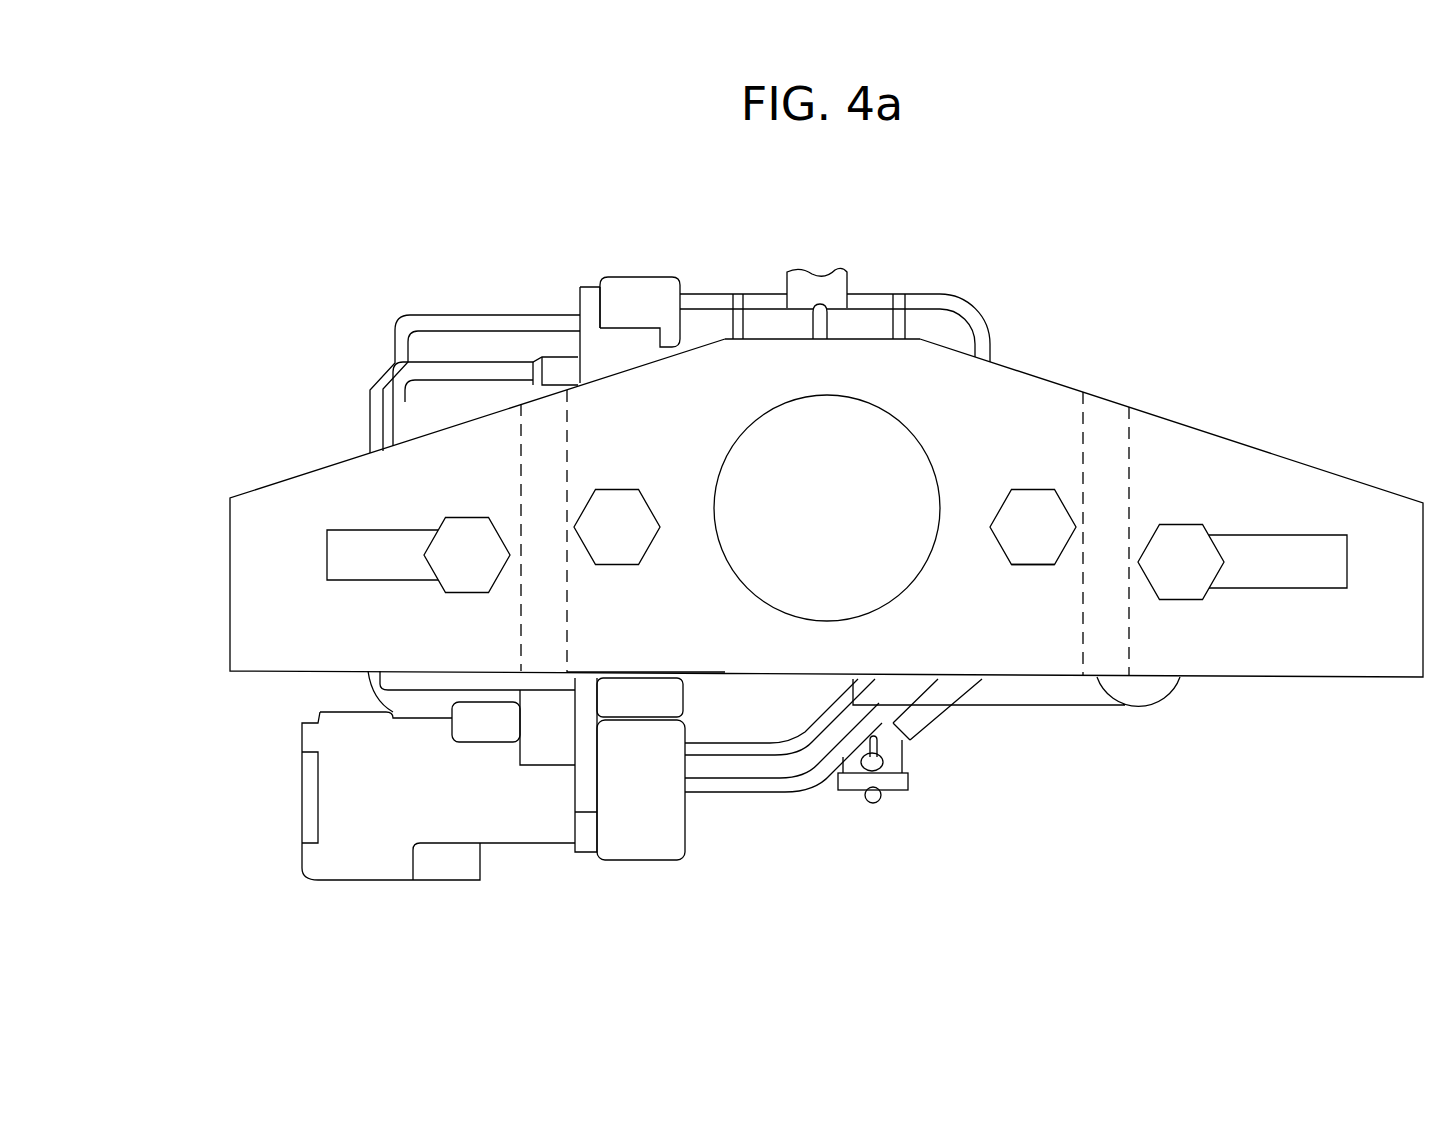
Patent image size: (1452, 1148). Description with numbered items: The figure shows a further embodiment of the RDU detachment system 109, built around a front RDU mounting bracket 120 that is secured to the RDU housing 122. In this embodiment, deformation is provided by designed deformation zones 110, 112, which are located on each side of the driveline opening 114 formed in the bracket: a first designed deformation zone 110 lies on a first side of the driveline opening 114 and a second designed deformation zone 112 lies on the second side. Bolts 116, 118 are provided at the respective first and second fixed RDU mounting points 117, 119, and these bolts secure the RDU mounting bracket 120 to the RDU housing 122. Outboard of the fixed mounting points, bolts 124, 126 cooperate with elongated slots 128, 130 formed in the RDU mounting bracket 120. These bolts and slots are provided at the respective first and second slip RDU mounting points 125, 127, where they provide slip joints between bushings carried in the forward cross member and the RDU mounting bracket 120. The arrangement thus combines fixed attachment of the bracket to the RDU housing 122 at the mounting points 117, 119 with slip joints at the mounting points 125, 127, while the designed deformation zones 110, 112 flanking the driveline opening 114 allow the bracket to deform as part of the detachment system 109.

The RDU detachment system 109 is at (1118, 291).
The designed deformation zone 110 is at (543, 440).
The designed deformation zone 112 is at (1105, 448).
The driveline opening 114 is at (890, 413).
The bolt 116 is at (622, 540).
The first fixed RDU mounting point 117 is at (590, 642).
The bolt 118 is at (1033, 542).
The second fixed RDU mounting point 119 is at (1052, 578).
The RDU mounting bracket 120 is at (723, 368).
The RDU housing 122 is at (770, 756).
The bolt 124 is at (432, 553).
The first slip RDU mounting point 125 is at (1322, 620).
The bolt 126 is at (1188, 578).
The second slip RDU mounting point 127 is at (340, 612).
The elongated slot 128 is at (360, 562).
The elongated slot 130 is at (1279, 550).